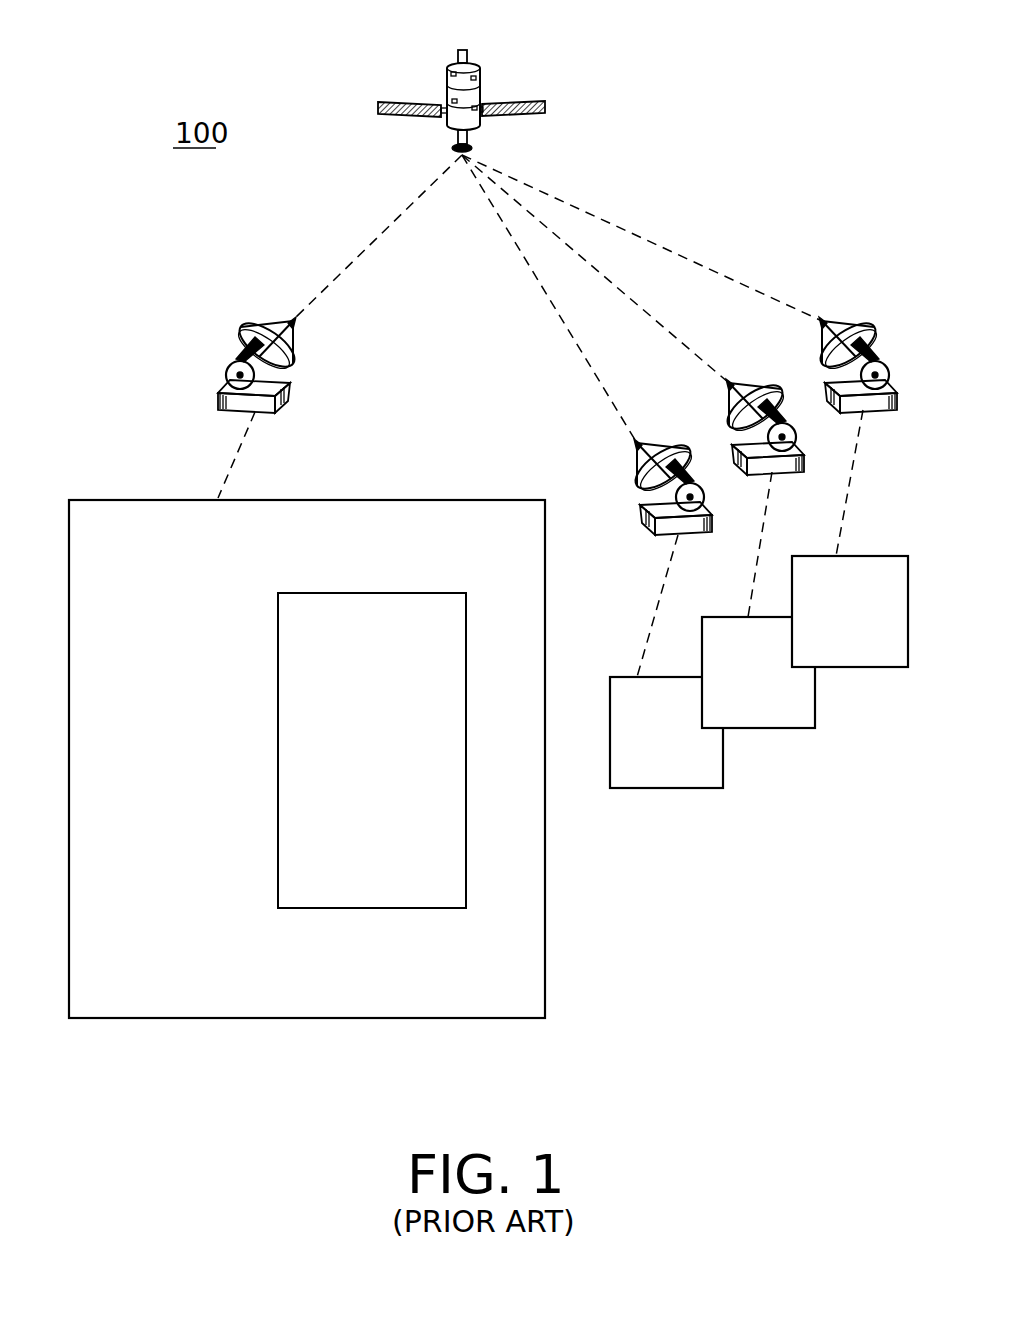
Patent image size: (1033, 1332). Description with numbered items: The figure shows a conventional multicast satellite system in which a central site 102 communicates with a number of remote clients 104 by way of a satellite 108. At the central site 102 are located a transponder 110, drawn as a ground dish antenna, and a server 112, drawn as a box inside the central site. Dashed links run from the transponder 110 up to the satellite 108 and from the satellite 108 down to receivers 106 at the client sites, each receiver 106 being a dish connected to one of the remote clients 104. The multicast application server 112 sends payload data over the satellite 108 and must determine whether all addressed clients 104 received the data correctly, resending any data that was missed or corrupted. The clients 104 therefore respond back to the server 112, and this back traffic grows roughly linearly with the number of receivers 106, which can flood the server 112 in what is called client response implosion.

The central site 102 is at (390, 500).
The remote clients 104 is at (770, 730).
The receivers 106 is at (857, 322).
The satellite 108 is at (462, 50).
The transponder 110 is at (292, 360).
The server 112 is at (333, 593).